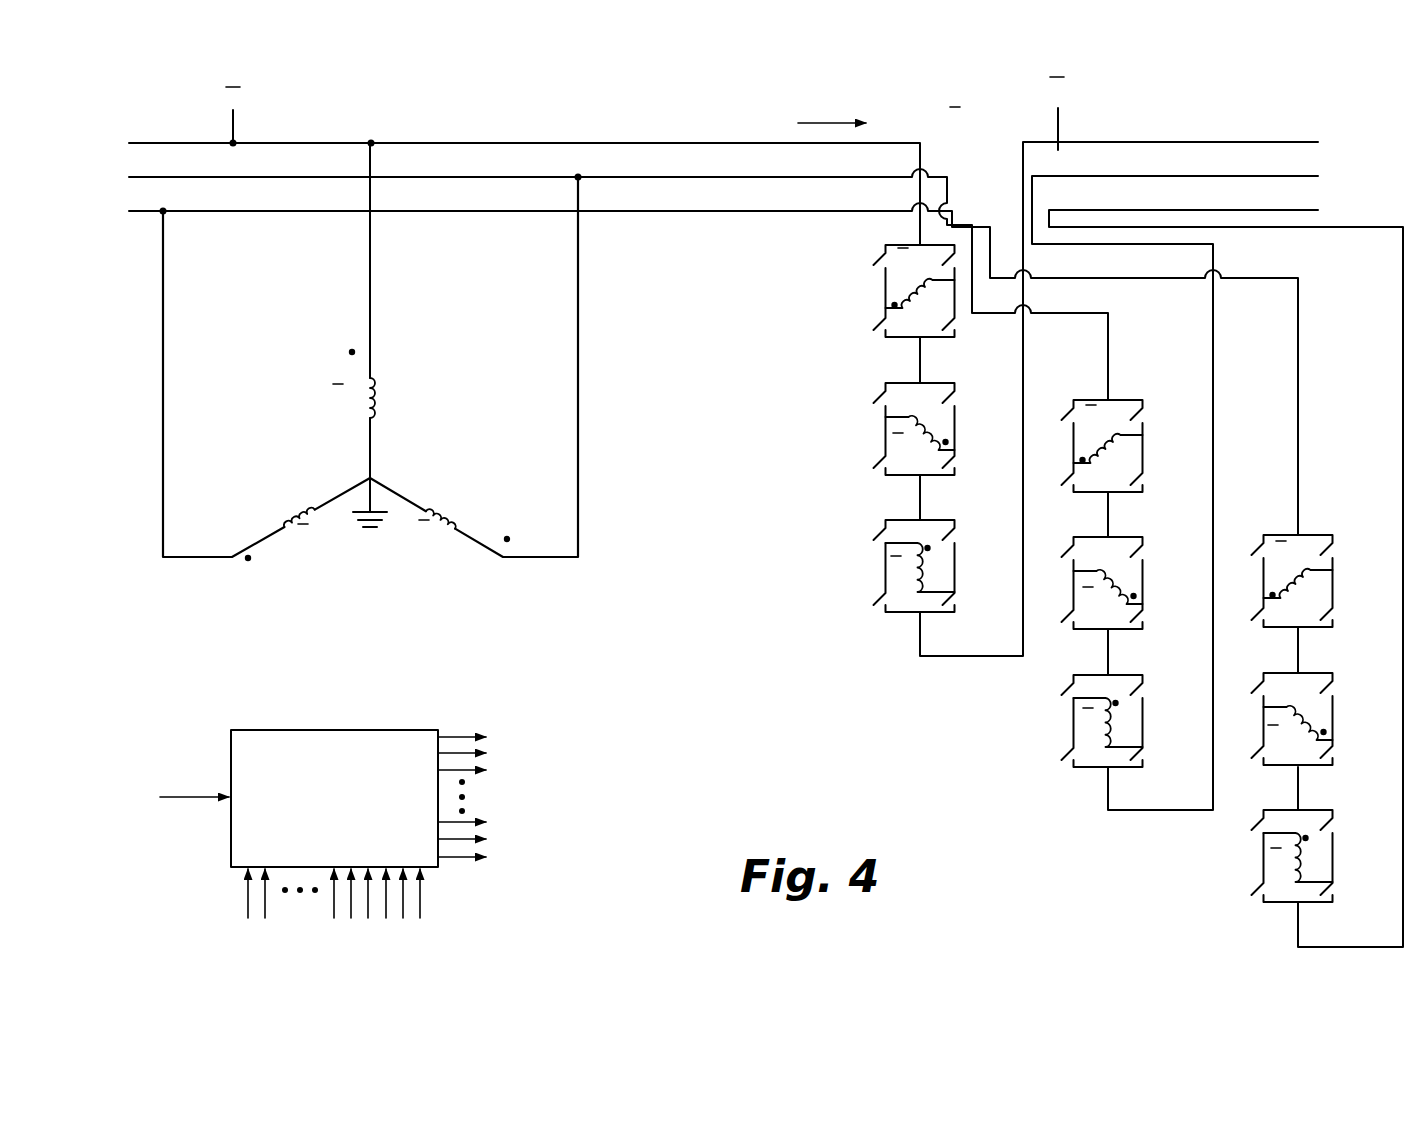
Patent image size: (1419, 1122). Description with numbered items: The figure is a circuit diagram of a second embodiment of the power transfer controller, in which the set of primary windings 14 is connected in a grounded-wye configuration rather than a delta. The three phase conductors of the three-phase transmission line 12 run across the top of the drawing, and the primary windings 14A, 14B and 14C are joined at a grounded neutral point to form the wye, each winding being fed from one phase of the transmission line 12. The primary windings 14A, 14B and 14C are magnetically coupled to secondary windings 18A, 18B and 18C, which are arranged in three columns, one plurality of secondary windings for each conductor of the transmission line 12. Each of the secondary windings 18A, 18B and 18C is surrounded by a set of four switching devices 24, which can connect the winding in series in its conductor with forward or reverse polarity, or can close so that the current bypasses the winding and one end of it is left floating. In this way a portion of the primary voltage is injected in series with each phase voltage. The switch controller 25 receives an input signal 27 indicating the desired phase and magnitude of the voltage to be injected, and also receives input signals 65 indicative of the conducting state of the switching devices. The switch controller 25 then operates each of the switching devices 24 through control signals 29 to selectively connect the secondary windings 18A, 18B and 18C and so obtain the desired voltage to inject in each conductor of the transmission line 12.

The three-phase transmission line 12 is at (167, 123).
The set of primary windings 14 is at (143, 290).
The primary winding 14A is at (383, 396).
The primary winding 14B is at (429, 510).
The primary winding 14C is at (299, 508).
The secondary winding 18A is at (913, 595).
The secondary winding 18B is at (950, 455).
The secondary winding 18C is at (897, 310).
The switching devices 24 is at (858, 255).
The switch controller 25 is at (321, 730).
The input signal 27 is at (180, 797).
The control signals 29 is at (457, 717).
The input signals 65 is at (232, 898).